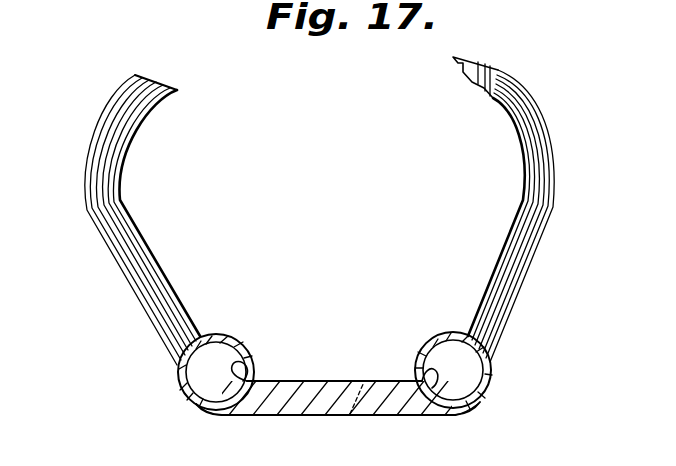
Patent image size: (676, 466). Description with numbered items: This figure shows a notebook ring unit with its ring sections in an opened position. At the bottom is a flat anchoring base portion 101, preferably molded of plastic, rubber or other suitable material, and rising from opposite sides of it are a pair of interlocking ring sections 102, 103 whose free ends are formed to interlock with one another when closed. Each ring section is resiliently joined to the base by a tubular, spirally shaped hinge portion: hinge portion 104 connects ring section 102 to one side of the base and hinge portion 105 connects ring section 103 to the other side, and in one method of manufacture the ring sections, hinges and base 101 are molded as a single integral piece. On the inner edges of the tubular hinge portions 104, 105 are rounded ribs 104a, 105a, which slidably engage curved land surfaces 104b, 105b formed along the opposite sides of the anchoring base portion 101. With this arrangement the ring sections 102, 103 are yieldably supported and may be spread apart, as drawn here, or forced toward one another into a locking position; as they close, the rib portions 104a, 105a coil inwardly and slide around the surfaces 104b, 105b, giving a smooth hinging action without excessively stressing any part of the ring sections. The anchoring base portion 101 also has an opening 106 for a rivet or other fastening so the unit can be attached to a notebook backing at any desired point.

The anchoring base portion 101 is at (291, 381).
The ring section 102 is at (100, 197).
The ring section 103 is at (543, 192).
The tubular hinge portion 104 is at (218, 336).
The rounded rib 104a is at (235, 366).
The curved land surface 104b is at (213, 403).
The tubular hinge portion 105 is at (453, 333).
The rounded rib 105a is at (428, 350).
The curved land surface 105b is at (450, 406).
The opening 106 is at (373, 377).